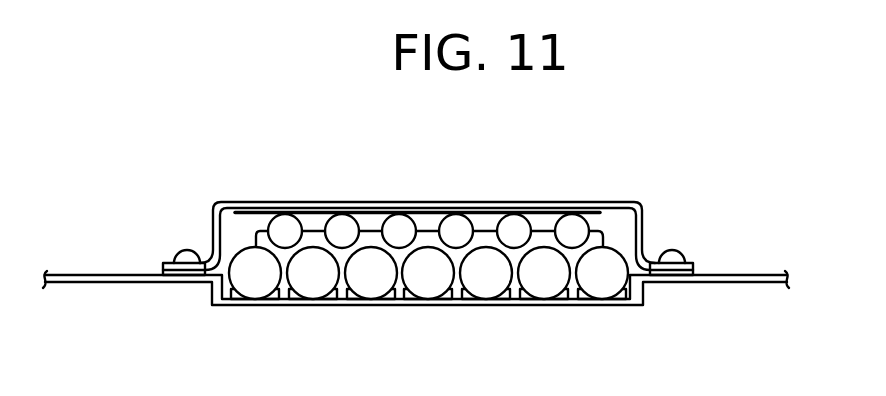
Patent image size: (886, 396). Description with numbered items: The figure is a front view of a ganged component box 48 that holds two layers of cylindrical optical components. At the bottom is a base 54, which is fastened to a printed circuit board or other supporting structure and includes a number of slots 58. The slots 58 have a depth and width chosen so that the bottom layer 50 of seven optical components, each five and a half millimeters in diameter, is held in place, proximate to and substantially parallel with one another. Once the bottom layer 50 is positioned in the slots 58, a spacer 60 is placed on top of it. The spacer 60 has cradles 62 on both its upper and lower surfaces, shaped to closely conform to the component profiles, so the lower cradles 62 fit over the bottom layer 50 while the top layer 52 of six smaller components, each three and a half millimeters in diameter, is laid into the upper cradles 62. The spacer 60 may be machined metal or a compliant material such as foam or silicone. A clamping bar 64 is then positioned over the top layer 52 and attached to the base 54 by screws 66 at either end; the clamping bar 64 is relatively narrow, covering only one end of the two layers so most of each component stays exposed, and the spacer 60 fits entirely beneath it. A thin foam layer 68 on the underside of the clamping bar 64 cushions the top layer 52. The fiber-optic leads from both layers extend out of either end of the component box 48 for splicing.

The ganged component box 48 is at (145, 194).
The bottom layer of optical components 50 is at (607, 287).
The top layer of optical components 52 is at (572, 218).
The base 54 is at (480, 306).
The slots 58 is at (273, 306).
The spacer 60 is at (605, 232).
The cradles 62 is at (363, 237).
The clamping bar 64 is at (274, 201).
The screws 66 is at (679, 258).
The thin foam layer 68 is at (428, 211).